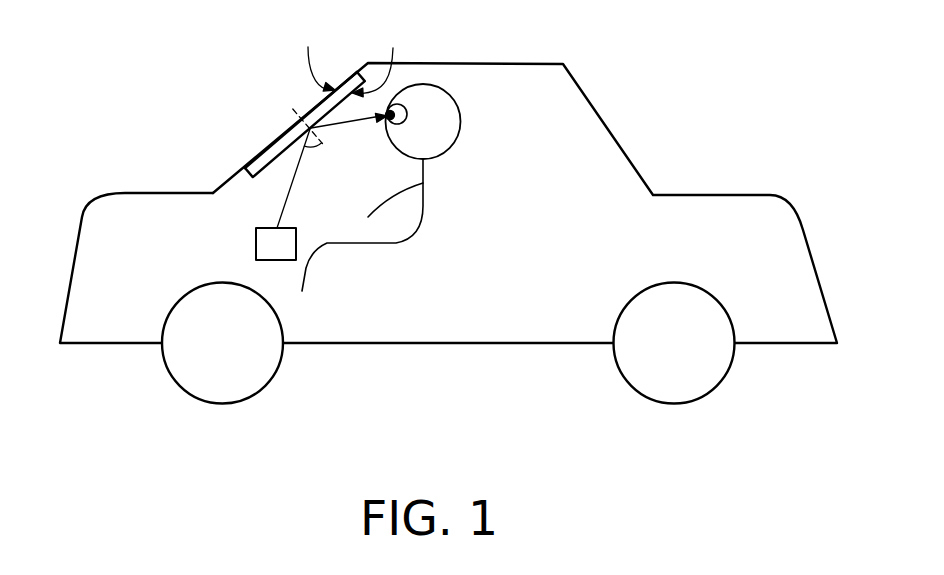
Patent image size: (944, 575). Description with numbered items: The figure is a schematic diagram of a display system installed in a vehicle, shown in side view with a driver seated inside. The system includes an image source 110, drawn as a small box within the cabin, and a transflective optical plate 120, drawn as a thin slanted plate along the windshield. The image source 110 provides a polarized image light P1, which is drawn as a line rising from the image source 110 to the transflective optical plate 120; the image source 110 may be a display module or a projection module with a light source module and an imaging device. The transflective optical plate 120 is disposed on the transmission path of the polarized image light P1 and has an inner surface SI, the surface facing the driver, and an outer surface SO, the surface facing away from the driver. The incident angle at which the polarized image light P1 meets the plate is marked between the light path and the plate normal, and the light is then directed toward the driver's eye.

The image source 110 is at (262, 245).
The transflective optical plate 120 is at (267, 157).
The polarized image light P1 is at (292, 195).
The outer surface SO is at (314, 52).
The inner surface SI is at (377, 55).